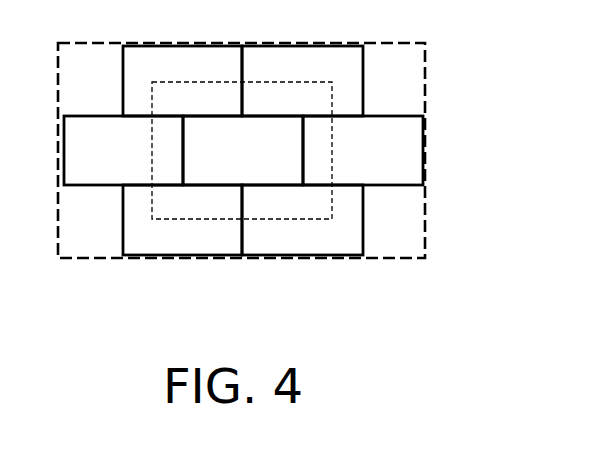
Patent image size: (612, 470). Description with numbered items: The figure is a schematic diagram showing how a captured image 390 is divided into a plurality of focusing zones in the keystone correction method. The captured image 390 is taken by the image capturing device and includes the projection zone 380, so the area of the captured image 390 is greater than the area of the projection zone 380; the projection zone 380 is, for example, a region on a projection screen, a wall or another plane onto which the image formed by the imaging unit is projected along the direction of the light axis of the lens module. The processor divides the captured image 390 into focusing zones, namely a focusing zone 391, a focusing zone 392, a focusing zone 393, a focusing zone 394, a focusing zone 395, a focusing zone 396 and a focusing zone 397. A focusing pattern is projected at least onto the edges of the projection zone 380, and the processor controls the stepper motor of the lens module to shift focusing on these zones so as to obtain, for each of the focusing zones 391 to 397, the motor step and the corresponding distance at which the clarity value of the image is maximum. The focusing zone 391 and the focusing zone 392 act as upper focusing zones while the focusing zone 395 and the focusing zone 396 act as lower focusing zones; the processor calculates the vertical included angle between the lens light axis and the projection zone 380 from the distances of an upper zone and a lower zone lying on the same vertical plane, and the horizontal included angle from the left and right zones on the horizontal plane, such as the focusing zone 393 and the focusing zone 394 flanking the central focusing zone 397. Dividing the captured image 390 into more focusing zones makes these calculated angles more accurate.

The projection zone 380 is at (332, 102).
The captured image 390 is at (425, 240).
The focusing zone 391 is at (182, 81).
The focusing zone 392 is at (302, 81).
The focusing zone 393 is at (123, 150).
The focusing zone 394 is at (363, 150).
The focusing zone 395 is at (182, 220).
The focusing zone 396 is at (302, 220).
The focusing zone 397 is at (243, 150).